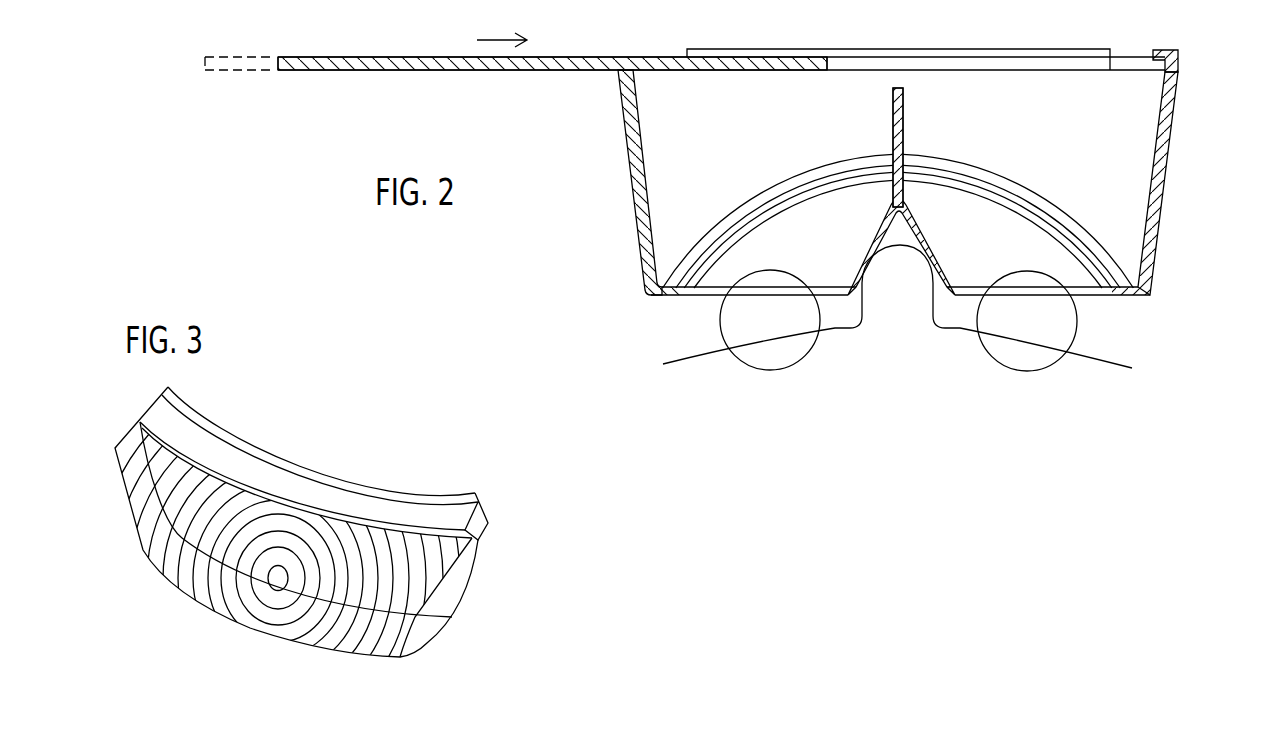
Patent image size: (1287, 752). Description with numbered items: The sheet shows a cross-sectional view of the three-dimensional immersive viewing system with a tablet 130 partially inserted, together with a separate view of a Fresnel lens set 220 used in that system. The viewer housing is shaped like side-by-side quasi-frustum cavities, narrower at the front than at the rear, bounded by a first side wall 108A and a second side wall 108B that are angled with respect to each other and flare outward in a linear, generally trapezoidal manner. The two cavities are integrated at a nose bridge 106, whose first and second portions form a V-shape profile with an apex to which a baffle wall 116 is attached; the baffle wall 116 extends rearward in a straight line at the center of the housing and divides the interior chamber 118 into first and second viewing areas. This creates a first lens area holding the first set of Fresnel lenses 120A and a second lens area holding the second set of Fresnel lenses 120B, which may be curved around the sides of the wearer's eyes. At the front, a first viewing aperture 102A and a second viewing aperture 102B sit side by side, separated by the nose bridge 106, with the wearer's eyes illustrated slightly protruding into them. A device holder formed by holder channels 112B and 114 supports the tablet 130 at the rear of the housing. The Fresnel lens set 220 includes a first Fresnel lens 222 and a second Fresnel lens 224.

In FIG. 2, the first viewing aperture 102A is at (780, 291).
In FIG. 2, the second viewing aperture 102B is at (1015, 293).
In FIG. 2, the nose bridge 106 is at (924, 231).
In FIG. 2, the first side wall 108A is at (630, 180).
In FIG. 2, the second side wall 108B is at (1167, 178).
In FIG. 2, the holder channel 112B is at (917, 49).
In FIG. 2, the holder channel 114 is at (1168, 50).
In FIG. 2, the baffle wall 116 is at (905, 107).
In FIG. 2, the interior chamber 118 is at (823, 117).
In FIG. 2, the first set of Fresnel lenses 120A is at (748, 180).
In FIG. 2, the second set of Fresnel lenses 120B is at (1059, 180).
In FIG. 2, the tablet 130 is at (409, 69).
In FIG. 3, the Fresnel lens set 220 is at (287, 543).
In FIG. 3, the first Fresnel lens 222 is at (453, 607).
In FIG. 3, the second Fresnel lens 224 is at (373, 485).